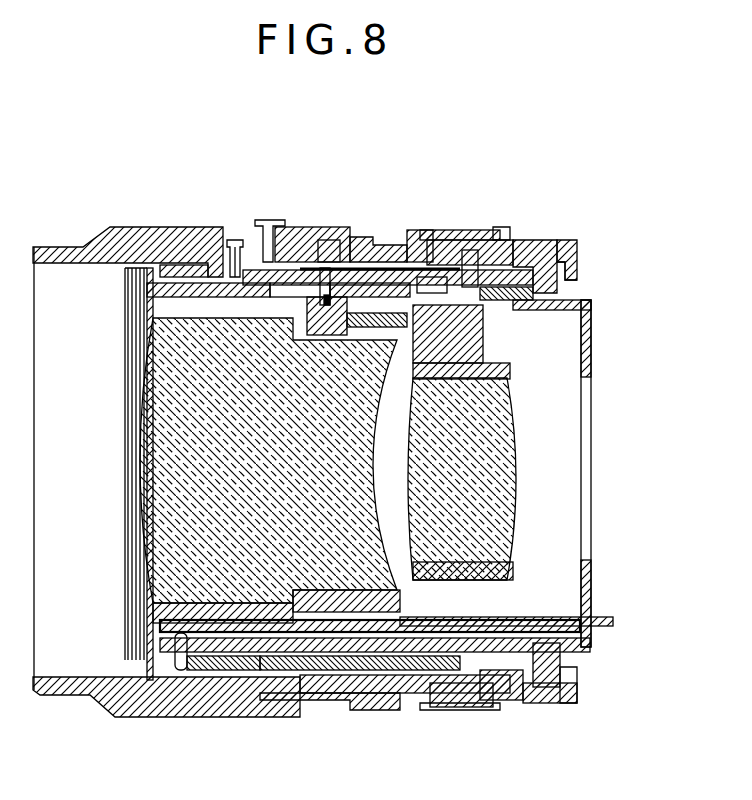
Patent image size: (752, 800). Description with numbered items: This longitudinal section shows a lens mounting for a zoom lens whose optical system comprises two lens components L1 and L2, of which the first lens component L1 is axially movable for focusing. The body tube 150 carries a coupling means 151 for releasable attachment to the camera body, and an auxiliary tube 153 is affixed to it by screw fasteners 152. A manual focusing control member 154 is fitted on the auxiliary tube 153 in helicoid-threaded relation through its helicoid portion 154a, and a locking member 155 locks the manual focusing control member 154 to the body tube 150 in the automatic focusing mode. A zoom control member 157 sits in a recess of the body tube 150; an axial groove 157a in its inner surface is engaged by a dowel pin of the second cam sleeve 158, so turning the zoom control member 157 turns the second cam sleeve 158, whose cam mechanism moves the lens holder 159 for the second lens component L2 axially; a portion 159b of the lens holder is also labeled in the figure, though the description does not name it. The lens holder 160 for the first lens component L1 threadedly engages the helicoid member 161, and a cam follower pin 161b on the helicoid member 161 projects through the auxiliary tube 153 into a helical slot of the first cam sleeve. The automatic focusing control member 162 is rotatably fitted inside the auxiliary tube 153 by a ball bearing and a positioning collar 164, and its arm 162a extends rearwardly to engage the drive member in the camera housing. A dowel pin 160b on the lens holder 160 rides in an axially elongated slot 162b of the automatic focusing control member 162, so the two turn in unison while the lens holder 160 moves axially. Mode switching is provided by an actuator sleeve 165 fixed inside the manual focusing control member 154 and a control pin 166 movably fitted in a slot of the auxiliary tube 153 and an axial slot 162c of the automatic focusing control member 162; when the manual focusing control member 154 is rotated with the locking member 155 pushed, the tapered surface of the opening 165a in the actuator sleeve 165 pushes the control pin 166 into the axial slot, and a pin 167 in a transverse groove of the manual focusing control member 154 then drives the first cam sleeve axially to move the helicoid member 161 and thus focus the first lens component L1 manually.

The body tube 150 is at (560, 243).
The coupling means 151 is at (579, 260).
The screw fasteners 152 is at (571, 306).
The auxiliary tube 153 is at (541, 243).
The manual focusing control member 154 is at (126, 238).
The helicoid portion 154a is at (328, 243).
The locking member 155 is at (266, 220).
The zoom control member 157 is at (470, 236).
The axial groove 157a is at (500, 240).
The second cam sleeve 158 is at (510, 287).
The lens holder 159 is at (407, 245).
The tab of second lens holder 159b is at (440, 237).
The lens holder 160 is at (152, 325).
The dowel pin 160b is at (300, 670).
The helicoid member 161 is at (303, 248).
The cam follower pin 161b is at (361, 248).
The automatic focusing control member 162 is at (350, 633).
The arm 162a is at (608, 617).
The axially elongated slot 162b is at (262, 652).
The axial slot 162c is at (165, 605).
The positioning collar 164 is at (390, 695).
The actuator sleeve 165 is at (180, 268).
The opening 165a is at (198, 680).
The control pin 166 is at (181, 672).
The pin 167 is at (232, 240).
The first lens component L1 is at (152, 440).
The second lens component L2 is at (515, 473).